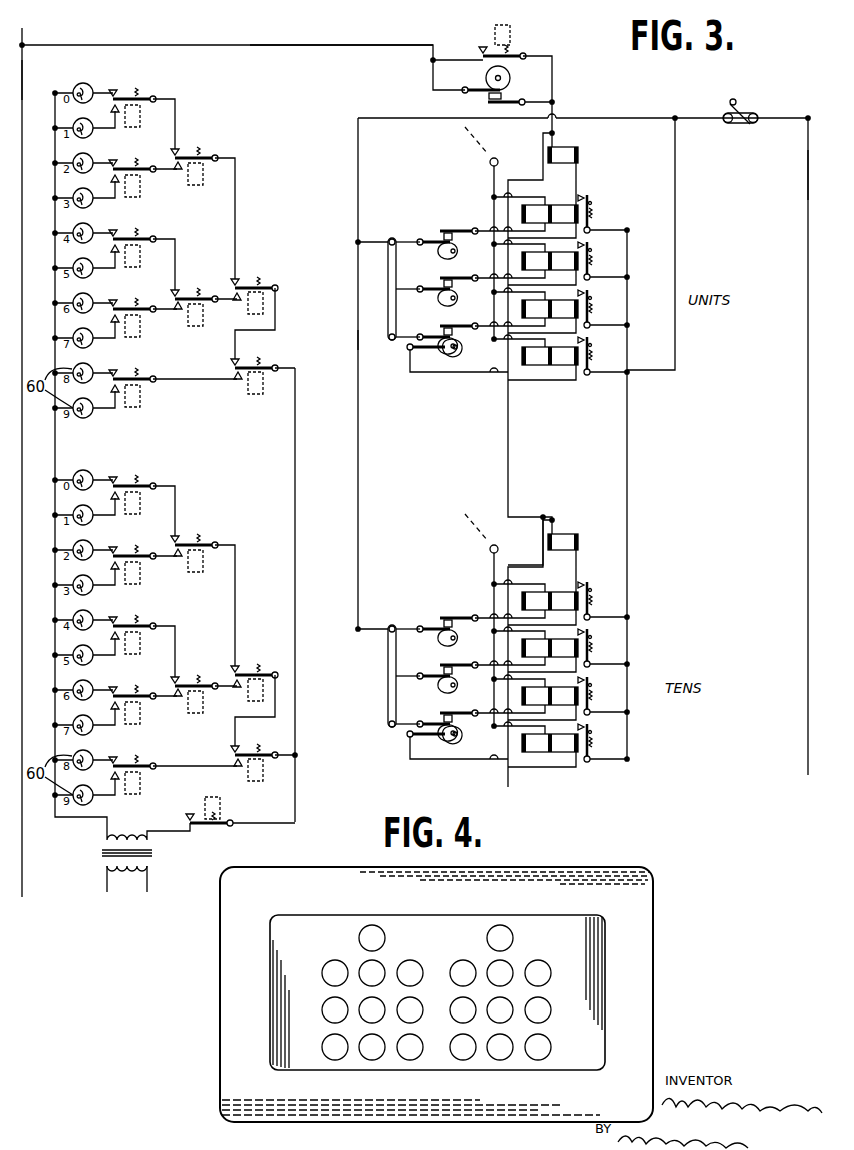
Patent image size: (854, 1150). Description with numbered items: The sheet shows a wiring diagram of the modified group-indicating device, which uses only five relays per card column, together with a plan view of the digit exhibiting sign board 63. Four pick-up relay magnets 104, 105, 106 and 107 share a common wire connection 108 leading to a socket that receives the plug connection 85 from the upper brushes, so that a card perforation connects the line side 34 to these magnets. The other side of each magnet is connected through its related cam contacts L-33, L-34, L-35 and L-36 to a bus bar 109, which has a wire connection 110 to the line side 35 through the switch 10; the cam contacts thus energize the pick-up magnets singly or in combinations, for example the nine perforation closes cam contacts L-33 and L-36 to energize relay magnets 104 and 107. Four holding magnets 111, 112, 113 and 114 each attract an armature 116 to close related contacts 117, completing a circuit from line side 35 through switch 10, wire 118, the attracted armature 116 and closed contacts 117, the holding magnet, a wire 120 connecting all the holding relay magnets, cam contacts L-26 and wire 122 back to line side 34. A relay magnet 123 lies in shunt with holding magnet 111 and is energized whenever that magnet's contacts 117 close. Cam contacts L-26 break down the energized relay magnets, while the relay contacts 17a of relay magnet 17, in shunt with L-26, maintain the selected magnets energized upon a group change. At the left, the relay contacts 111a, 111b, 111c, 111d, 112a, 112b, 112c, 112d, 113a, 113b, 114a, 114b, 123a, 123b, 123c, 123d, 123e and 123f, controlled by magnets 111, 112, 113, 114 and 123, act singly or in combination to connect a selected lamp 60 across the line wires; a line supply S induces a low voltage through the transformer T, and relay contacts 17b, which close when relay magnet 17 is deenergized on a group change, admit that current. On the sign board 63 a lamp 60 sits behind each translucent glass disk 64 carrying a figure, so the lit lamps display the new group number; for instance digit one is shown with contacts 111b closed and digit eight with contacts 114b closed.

In FIG. 3, the switch 10 is at (749, 107).
In FIG. 3, the relay magnet 17 is at (524, 38).
In FIG. 3, the relay contacts 17a is at (483, 57).
In FIG. 3, the relay contacts 17b is at (205, 830).
In FIG. 3, the line side 34 is at (22, 66).
In FIG. 3, the line side 35 is at (808, 172).
In FIG. 3, the lamp 60 is at (75, 190).
In FIG. 4, the sign board 63 is at (605, 985).
In FIG. 4, the translucent glass disk 64 is at (535, 1022).
In FIG. 3, the plug connection 85 is at (465, 150).
In FIG. 3, the pick-up relay magnet 104 is at (522, 213).
In FIG. 3, the pick-up relay magnet 105 is at (522, 260).
In FIG. 3, the pick-up relay magnet 106 is at (522, 308).
In FIG. 3, the pick-up relay magnet 107 is at (522, 356).
In FIG. 3, the common wire connection 108 is at (494, 180).
In FIG. 3, the bus bar 109 is at (388, 275).
In FIG. 3, the wire connection 110 is at (358, 340).
In FIG. 3, the holding magnet 111 is at (158, 188).
In FIG. 3, the relay contacts 111a is at (124, 93).
In FIG. 3, the relay contacts 111b is at (119, 114).
In FIG. 3, the relay contacts 111c is at (124, 163).
In FIG. 3, the relay contacts 111d is at (119, 184).
In FIG. 3, the holding magnet 112 is at (214, 310).
In FIG. 3, the relay contacts 112a is at (183, 152).
In FIG. 3, the relay contacts 112b is at (176, 170).
In FIG. 3, the relay contacts 112c is at (183, 293).
In FIG. 3, the relay contacts 112d is at (176, 310).
In FIG. 3, the holding magnet 113 is at (263, 302).
In FIG. 3, the relay contacts 113a is at (243, 282).
In FIG. 3, the relay contacts 113b is at (235, 292).
In FIG. 3, the holding magnet 114 is at (263, 380).
In FIG. 3, the relay contacts 114a is at (231, 367).
In FIG. 3, the relay contacts 114b is at (236, 380).
In FIG. 3, the armature 116 is at (592, 233).
In FIG. 3, the relay contacts 117 is at (585, 197).
In FIG. 3, the wire 118 is at (675, 370).
In FIG. 3, the wire 120 is at (508, 463).
In FIG. 3, the wire 122 is at (305, 45).
In FIG. 3, the relay magnet 123 is at (568, 153).
In FIG. 3, the relay contacts 123a is at (124, 233).
In FIG. 3, the relay contacts 123b is at (119, 254).
In FIG. 3, the relay contacts 123c is at (124, 303).
In FIG. 3, the relay contacts 123d is at (119, 324).
In FIG. 3, the relay contacts 123e is at (124, 373).
In FIG. 3, the relay contacts 123f is at (119, 394).
In FIG. 3, the cam contacts L-26 is at (505, 100).
In FIG. 3, the cam contacts L-33 is at (450, 232).
In FIG. 3, the cam contacts L-34 is at (450, 279).
In FIG. 3, the cam contacts L-35 is at (450, 327).
In FIG. 3, the cam contacts L-36 is at (428, 355).
In FIG. 3, the transformer T is at (146, 847).
In FIG. 3, the line supply S is at (127, 881).